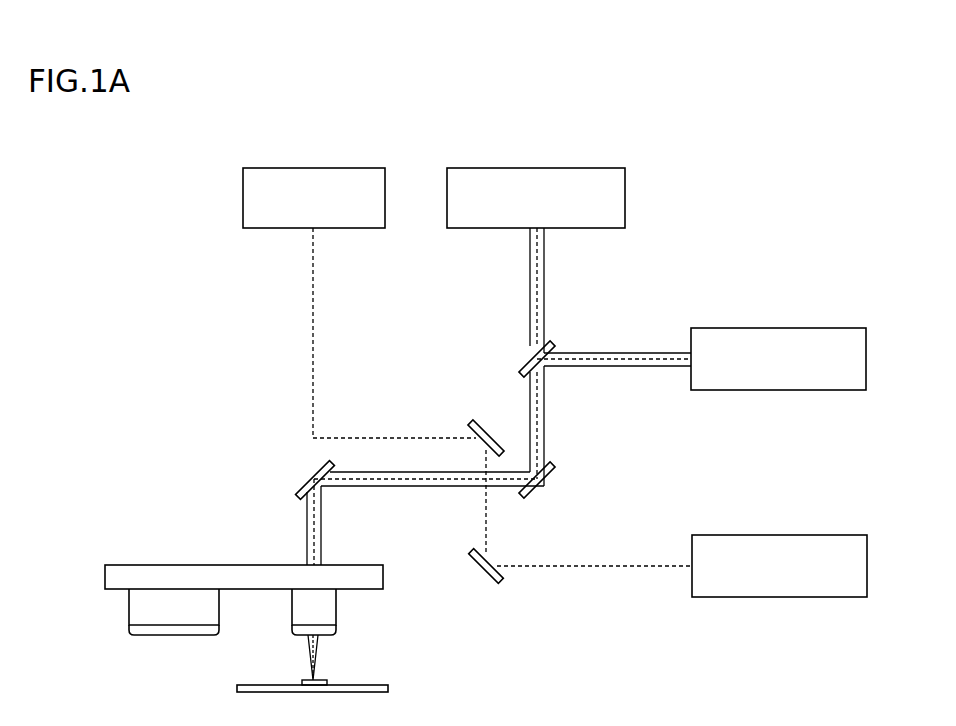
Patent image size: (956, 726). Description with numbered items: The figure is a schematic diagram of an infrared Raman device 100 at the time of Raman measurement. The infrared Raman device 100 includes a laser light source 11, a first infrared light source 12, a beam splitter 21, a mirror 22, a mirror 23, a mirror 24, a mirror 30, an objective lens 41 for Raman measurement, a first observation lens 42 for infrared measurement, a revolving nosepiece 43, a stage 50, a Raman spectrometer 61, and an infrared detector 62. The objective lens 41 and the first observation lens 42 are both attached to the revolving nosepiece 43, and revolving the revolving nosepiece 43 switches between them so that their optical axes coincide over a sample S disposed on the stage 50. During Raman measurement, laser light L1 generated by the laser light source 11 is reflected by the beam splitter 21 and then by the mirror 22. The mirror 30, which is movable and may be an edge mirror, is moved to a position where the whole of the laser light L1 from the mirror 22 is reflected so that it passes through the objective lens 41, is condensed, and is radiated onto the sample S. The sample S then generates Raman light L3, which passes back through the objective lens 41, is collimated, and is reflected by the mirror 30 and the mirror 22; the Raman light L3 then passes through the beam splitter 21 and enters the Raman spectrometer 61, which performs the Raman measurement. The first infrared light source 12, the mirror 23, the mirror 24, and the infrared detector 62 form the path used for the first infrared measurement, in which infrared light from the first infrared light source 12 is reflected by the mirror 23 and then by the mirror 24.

The infrared Raman device 100 is at (798, 159).
The laser light source 11 is at (707, 338).
The first infrared light source 12 is at (705, 542).
The beam splitter 21 is at (522, 367).
The mirror 22 is at (537, 499).
The mirror 23 is at (492, 582).
The mirror 24 is at (476, 424).
The mirror 30 is at (298, 489).
The objective lens for Raman measurement 41 is at (330, 609).
The first observation lens for infrared measurement 42 is at (135, 608).
The revolving nosepiece 43 is at (122, 573).
The stage 50 is at (380, 686).
The Raman spectrometer 61 is at (575, 175).
The infrared detector 62 is at (272, 173).
The laser light L1 is at (625, 367).
The Raman light L3 is at (530, 293).
The sample S is at (305, 681).